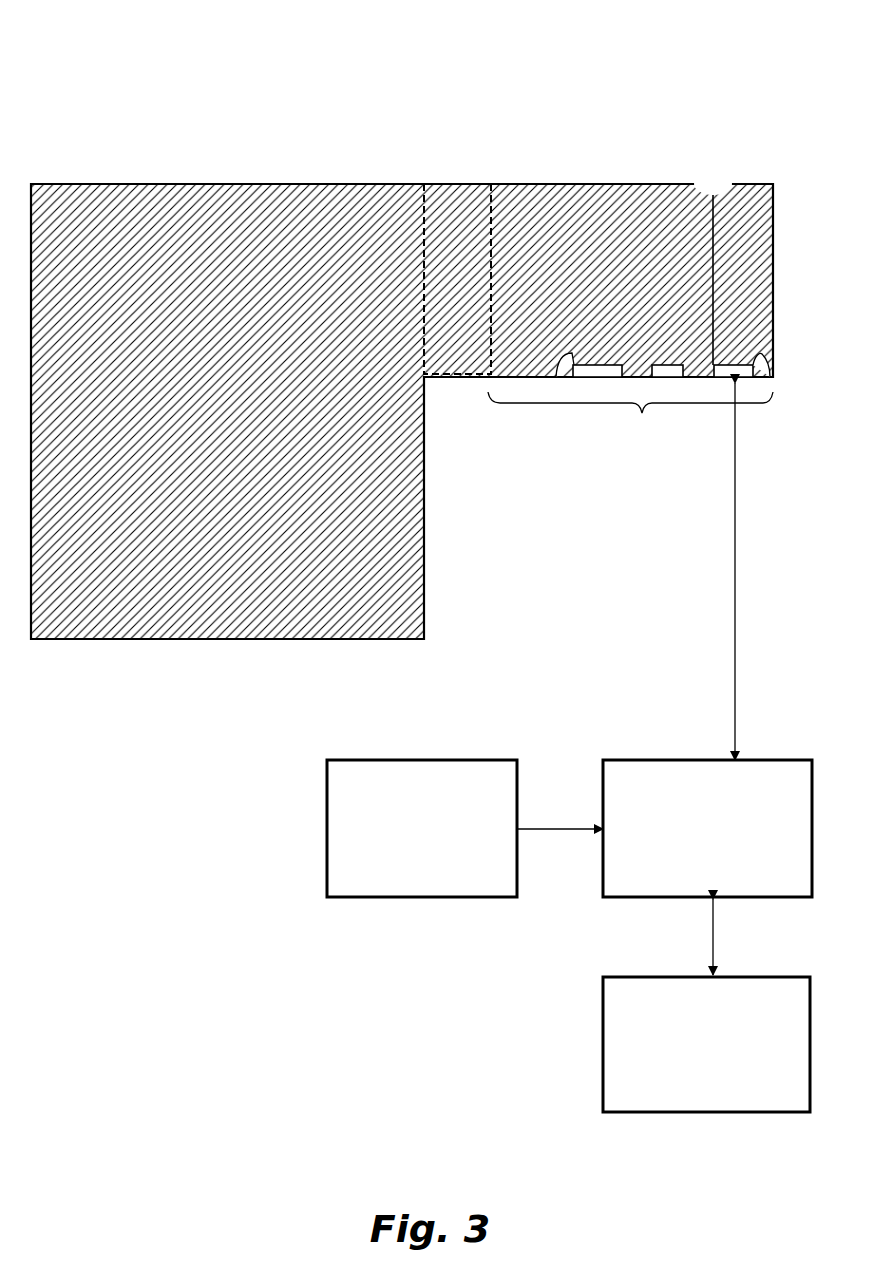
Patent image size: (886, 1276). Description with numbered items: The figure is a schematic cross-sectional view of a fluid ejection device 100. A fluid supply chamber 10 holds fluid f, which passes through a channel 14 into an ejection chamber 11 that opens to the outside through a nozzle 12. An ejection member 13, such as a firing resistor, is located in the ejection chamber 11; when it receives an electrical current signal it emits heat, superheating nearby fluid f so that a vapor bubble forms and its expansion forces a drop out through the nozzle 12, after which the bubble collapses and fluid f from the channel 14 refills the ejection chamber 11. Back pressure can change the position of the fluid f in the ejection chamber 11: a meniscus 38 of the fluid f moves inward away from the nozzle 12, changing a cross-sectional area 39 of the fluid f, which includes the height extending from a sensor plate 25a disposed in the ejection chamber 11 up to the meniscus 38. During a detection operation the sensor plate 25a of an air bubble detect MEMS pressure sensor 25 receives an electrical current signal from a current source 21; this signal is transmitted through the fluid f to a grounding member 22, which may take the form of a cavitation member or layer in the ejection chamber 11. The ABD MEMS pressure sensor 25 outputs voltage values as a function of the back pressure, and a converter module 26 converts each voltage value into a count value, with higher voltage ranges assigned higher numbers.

The fluid ejection device 100 is at (421, 40).
The fluid supply chamber 10 is at (231, 420).
The channel 14 is at (453, 203).
The fluid f is at (591, 258).
The nozzle 12 is at (715, 187).
The meniscus 38 is at (702, 184).
The cross-sectional area 39 is at (712, 237).
The ejection member 13 is at (557, 380).
The grounding member 22 is at (667, 380).
The ejection chamber 11 is at (641, 413).
The sensor plate 25a is at (765, 380).
The current source 21 is at (415, 882).
The ABD MEMS pressure sensor 25 is at (699, 882).
The converter module 26 is at (695, 1097).